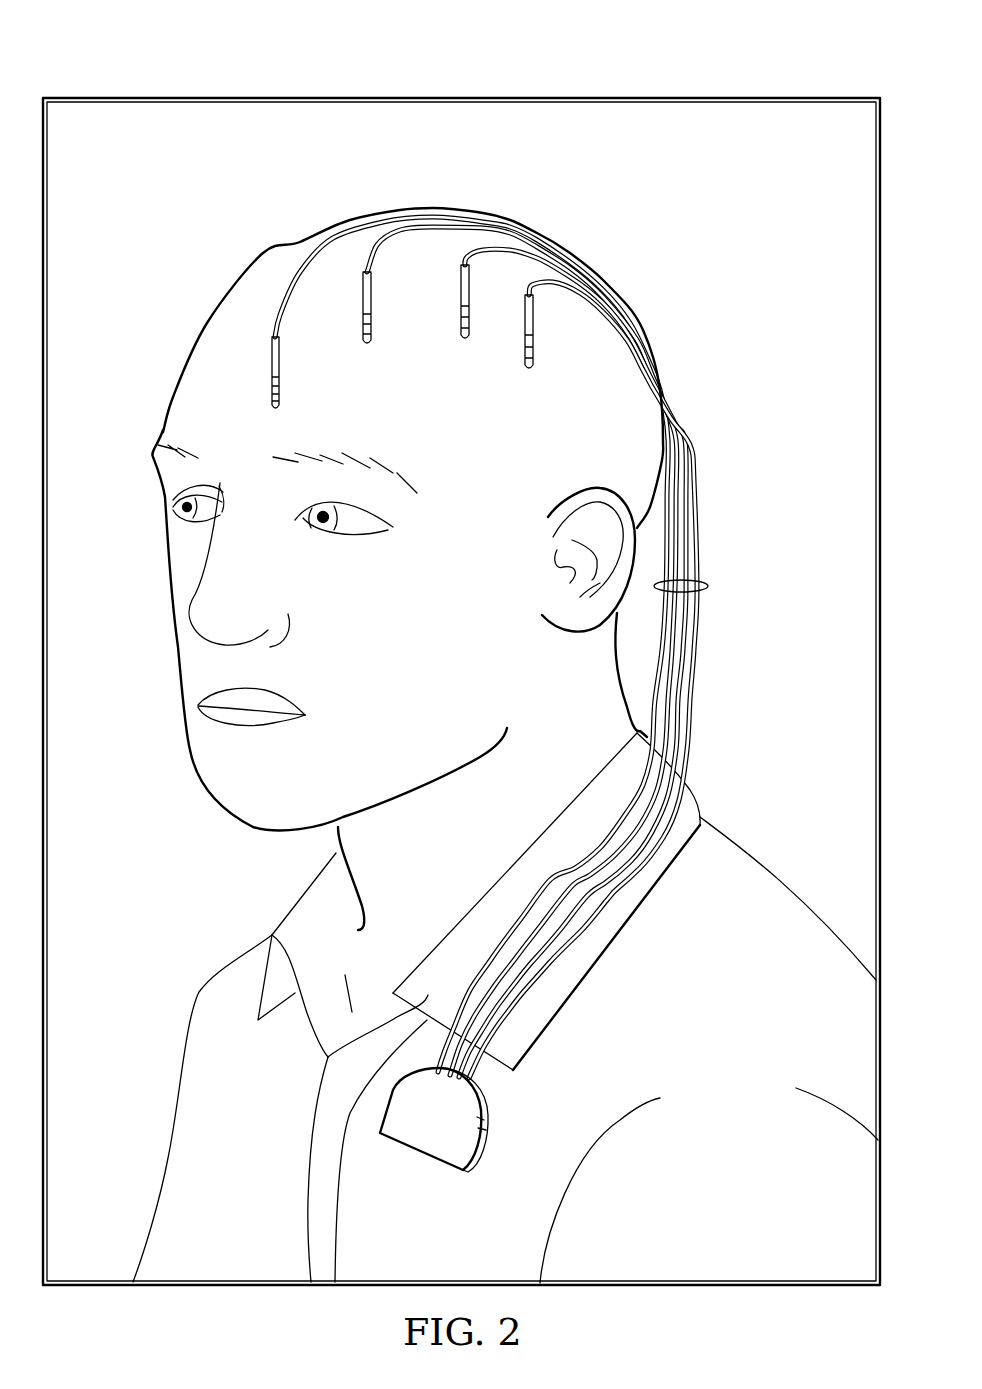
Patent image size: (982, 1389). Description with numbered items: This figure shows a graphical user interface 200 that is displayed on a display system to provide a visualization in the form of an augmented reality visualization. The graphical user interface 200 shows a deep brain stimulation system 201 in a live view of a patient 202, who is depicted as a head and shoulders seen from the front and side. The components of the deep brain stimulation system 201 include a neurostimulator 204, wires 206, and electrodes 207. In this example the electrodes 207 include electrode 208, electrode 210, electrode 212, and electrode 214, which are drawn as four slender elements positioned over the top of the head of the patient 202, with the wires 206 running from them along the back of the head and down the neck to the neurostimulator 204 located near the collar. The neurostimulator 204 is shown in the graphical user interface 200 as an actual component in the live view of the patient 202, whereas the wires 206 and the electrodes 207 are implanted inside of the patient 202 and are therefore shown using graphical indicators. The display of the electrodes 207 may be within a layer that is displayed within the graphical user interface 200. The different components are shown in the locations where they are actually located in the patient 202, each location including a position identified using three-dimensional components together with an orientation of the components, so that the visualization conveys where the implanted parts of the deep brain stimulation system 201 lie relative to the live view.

The graphical user interface 200 is at (261, 70).
The deep brain stimulation system 201 is at (150, 702).
The patient 202 is at (237, 288).
The neurostimulator 204 is at (420, 1150).
The wires 206 is at (708, 587).
The electrodes 207 is at (417, 647).
The electrode 208 is at (367, 347).
The electrode 210 is at (270, 373).
The electrode 212 is at (465, 342).
The electrode 214 is at (529, 372).